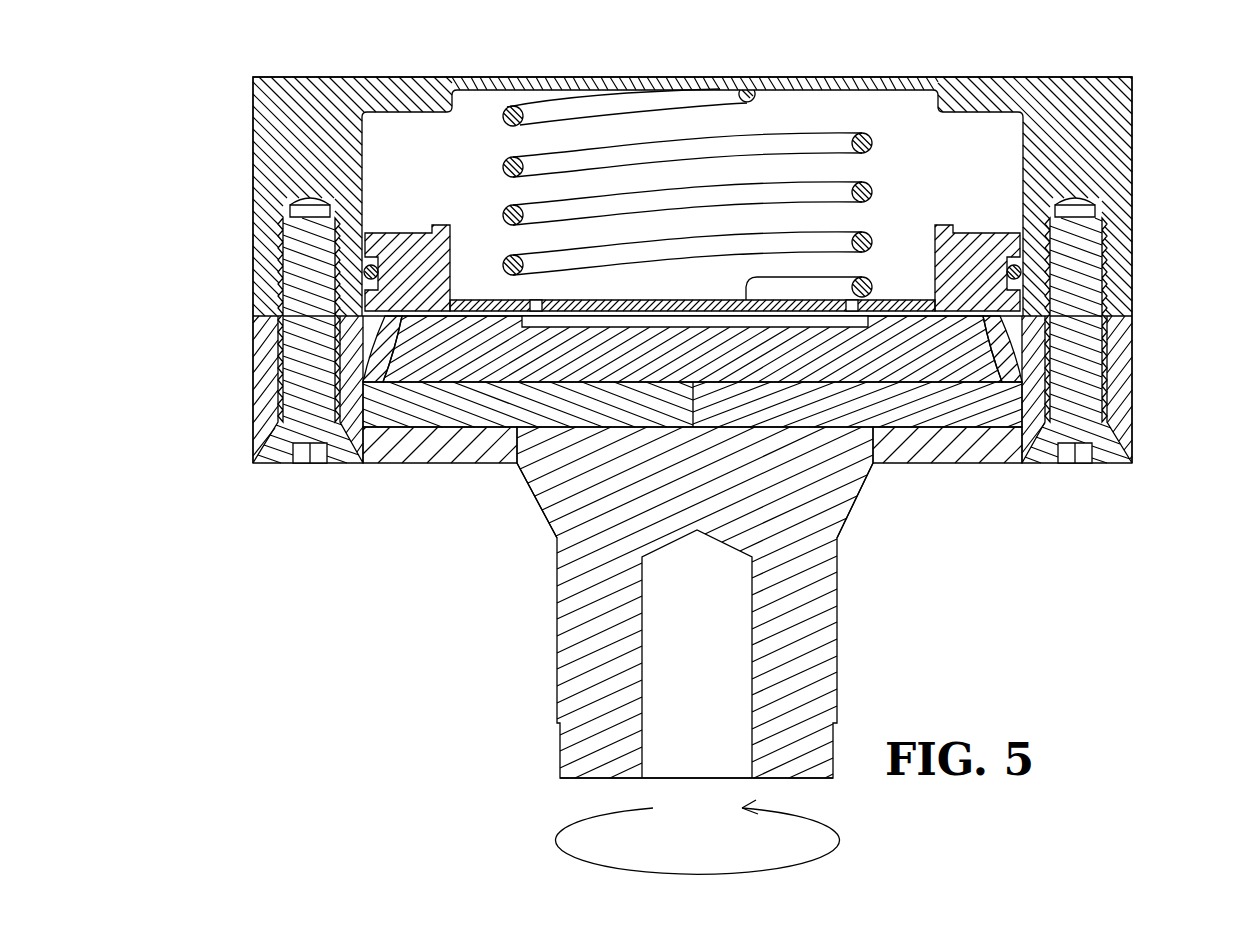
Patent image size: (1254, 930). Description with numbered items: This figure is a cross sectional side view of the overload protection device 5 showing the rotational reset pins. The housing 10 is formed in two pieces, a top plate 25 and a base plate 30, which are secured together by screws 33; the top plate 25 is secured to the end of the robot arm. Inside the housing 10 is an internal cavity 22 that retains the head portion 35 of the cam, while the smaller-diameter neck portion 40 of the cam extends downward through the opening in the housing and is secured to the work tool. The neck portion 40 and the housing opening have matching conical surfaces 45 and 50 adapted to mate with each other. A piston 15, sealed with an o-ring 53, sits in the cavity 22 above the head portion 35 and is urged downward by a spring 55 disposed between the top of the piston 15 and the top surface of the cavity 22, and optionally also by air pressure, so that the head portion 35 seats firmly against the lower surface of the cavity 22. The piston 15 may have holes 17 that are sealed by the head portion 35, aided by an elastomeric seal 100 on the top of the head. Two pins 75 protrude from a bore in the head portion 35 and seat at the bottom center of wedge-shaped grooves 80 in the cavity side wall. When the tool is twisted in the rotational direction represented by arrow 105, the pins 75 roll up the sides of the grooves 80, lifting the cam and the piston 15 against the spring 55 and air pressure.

The overload protection device 5 is at (285, 51).
The housing 10 is at (1163, 328).
The piston 15 is at (990, 230).
The holes 17 is at (533, 300).
The internal cavity 22 is at (403, 132).
The top plate 25 is at (1068, 76).
The base plate 30 is at (943, 458).
The screws 33 is at (272, 465).
The head portion 35 is at (942, 367).
The neck portion 40 is at (828, 588).
The conical surface 45 is at (533, 497).
The conical surface 50 is at (503, 450).
The o-ring 53 is at (1015, 264).
The spring 55 is at (643, 100).
The pins 75 is at (422, 415).
The wedge-shaped grooves 80 is at (378, 352).
The seal 100 is at (628, 328).
The arrow 105 is at (555, 840).